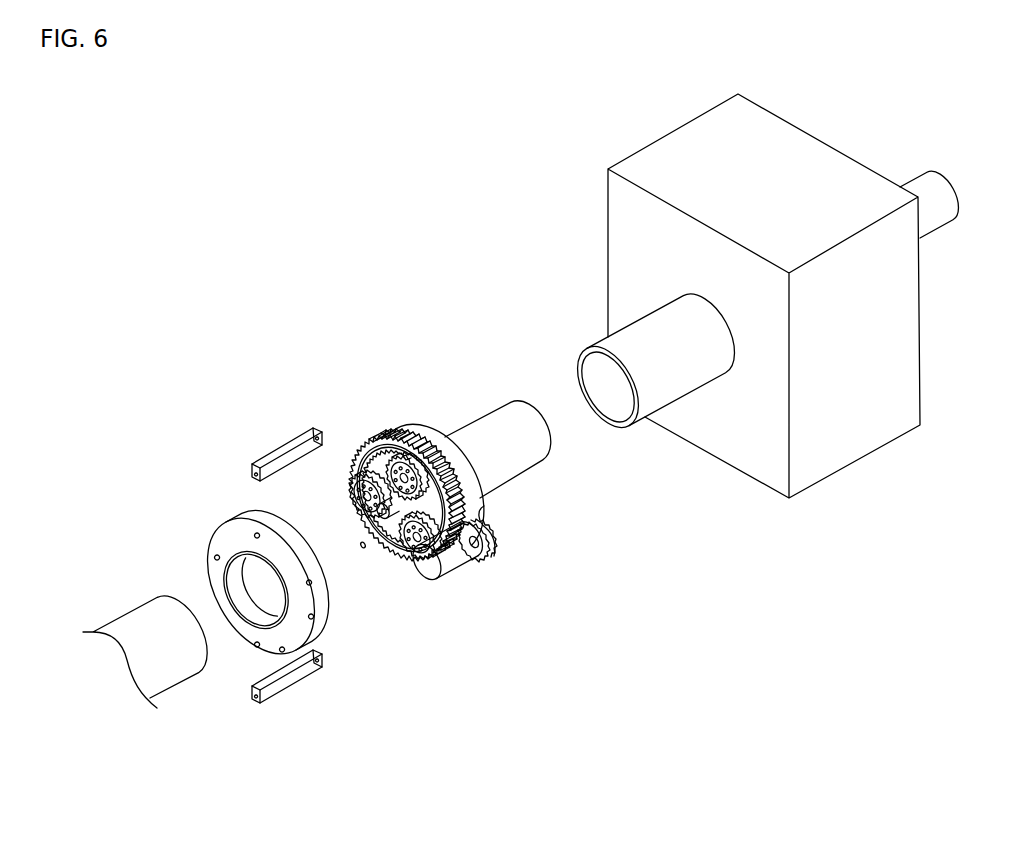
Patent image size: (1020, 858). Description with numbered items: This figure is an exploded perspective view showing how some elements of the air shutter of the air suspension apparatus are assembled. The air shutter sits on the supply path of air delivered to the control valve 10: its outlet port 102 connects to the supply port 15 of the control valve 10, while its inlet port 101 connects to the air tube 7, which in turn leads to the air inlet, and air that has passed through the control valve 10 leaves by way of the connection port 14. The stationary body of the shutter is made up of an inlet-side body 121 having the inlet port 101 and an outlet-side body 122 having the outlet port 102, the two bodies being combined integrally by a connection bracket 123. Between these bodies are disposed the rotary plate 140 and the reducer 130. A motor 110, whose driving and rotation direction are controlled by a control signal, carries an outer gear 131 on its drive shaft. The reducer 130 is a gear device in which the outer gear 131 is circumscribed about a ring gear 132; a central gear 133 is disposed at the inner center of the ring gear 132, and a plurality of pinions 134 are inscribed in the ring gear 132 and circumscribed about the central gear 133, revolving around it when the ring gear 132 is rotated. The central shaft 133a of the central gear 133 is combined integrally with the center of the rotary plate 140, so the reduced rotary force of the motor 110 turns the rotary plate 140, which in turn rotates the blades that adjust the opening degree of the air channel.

The air tube 7 is at (128, 622).
The control valve 10 is at (750, 482).
The connection port 14 is at (921, 182).
The supply port 15 is at (637, 332).
The inlet port 101 is at (230, 580).
The outlet port 102 is at (520, 474).
The motor 110 is at (452, 570).
The inlet-side body 121 is at (313, 623).
The outlet-side body 122 is at (398, 430).
The connection bracket 123 is at (268, 458).
The reducer 130 is at (349, 424).
The outer gear 131 is at (490, 562).
The ring gear 132 is at (495, 532).
The central gear 133 is at (411, 572).
The central shaft 133a is at (363, 548).
The pinions 134 is at (348, 500).
The rotary plate 140 is at (268, 505).